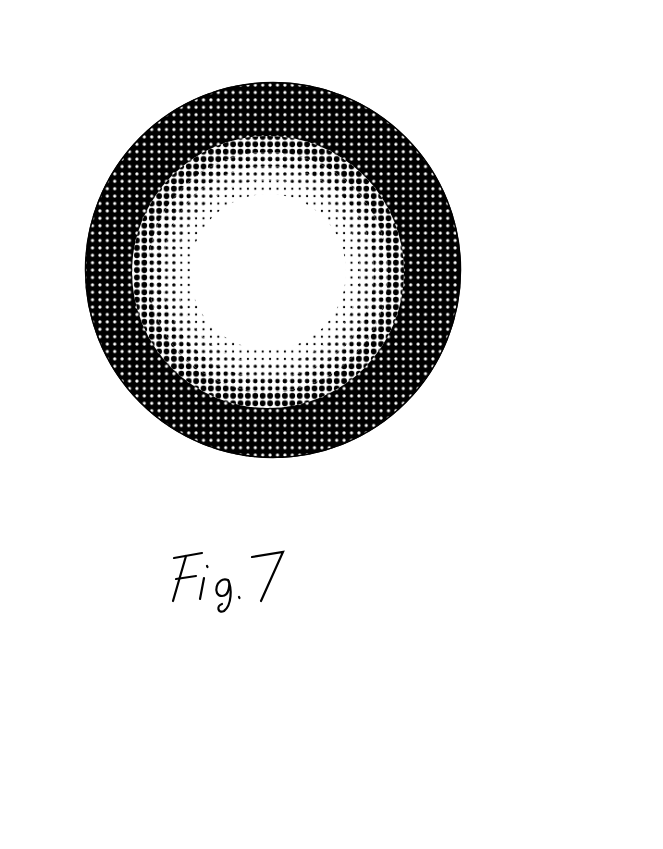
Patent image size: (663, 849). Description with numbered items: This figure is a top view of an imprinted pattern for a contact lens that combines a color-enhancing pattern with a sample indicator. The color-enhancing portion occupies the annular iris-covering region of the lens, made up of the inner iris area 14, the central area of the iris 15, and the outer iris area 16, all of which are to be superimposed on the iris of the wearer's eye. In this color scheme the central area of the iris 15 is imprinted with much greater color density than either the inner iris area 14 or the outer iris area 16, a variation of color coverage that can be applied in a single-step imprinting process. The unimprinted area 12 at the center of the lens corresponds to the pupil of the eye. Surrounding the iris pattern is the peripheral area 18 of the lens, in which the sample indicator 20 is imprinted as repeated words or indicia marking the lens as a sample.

The pupil area 12 is at (268, 272).
The inner iris area 14 is at (213, 356).
The central area of the iris 15 is at (128, 408).
The outer iris area 16 is at (413, 390).
The peripheral area 18 is at (318, 58).
The sample indicator 20 is at (500, 266).